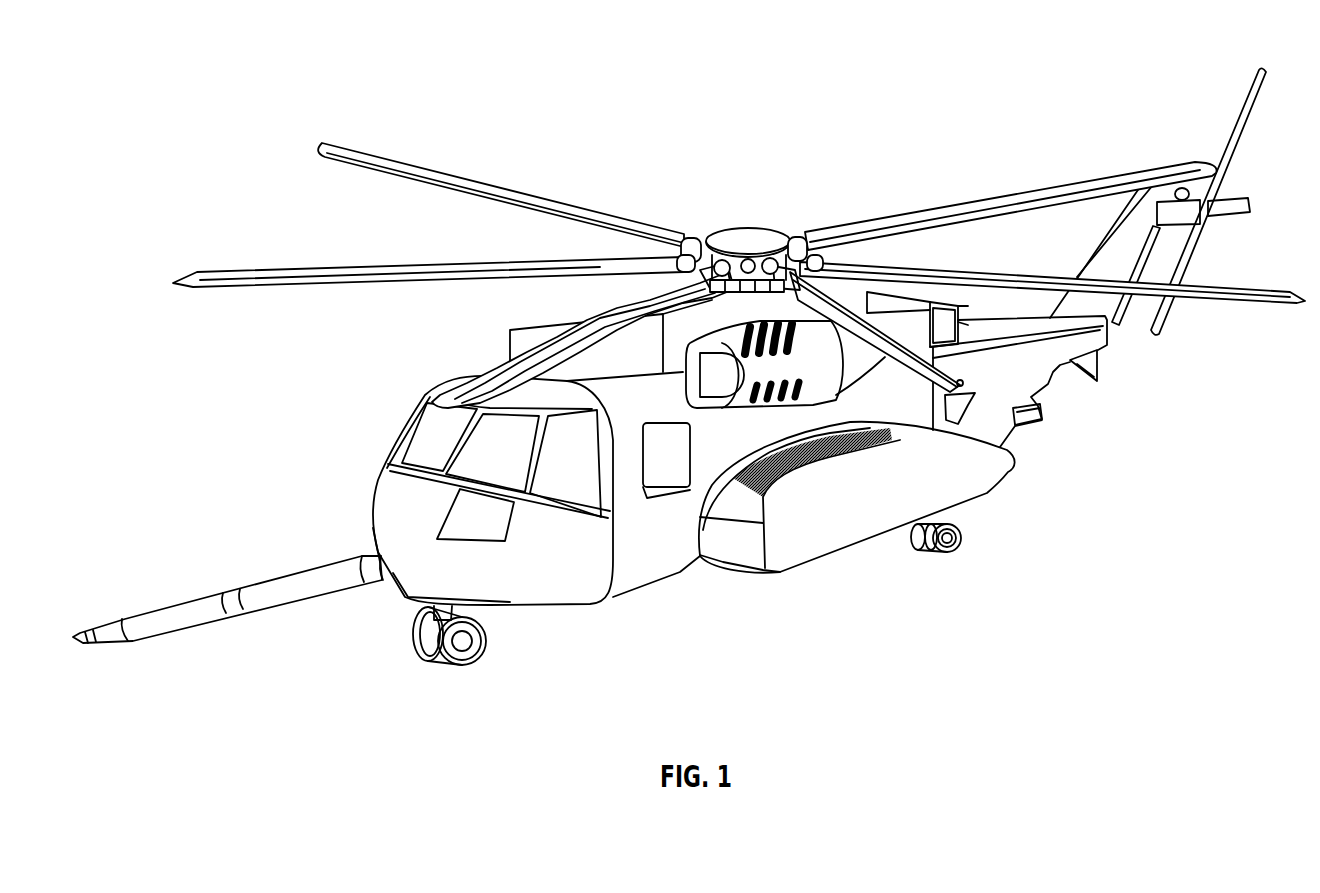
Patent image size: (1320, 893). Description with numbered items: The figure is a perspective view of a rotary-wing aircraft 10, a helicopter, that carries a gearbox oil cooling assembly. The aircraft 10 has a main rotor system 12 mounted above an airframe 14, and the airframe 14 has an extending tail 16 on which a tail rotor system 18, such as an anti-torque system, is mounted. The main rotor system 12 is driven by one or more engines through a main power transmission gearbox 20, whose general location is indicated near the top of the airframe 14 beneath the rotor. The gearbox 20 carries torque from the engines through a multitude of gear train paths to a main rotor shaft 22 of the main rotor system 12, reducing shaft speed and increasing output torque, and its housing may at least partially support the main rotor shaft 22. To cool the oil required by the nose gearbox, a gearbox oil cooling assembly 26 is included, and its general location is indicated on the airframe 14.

The rotary-wing aircraft 10 is at (696, 366).
The main rotor system 12 is at (739, 283).
The airframe 14 is at (664, 568).
The extending tail 16 is at (1088, 301).
The tail rotor system 18 is at (1252, 132).
The main power transmission gearbox 20 is at (785, 387).
The main rotor shaft 22 is at (670, 262).
The gearbox oil cooling assembly 26 is at (793, 366).